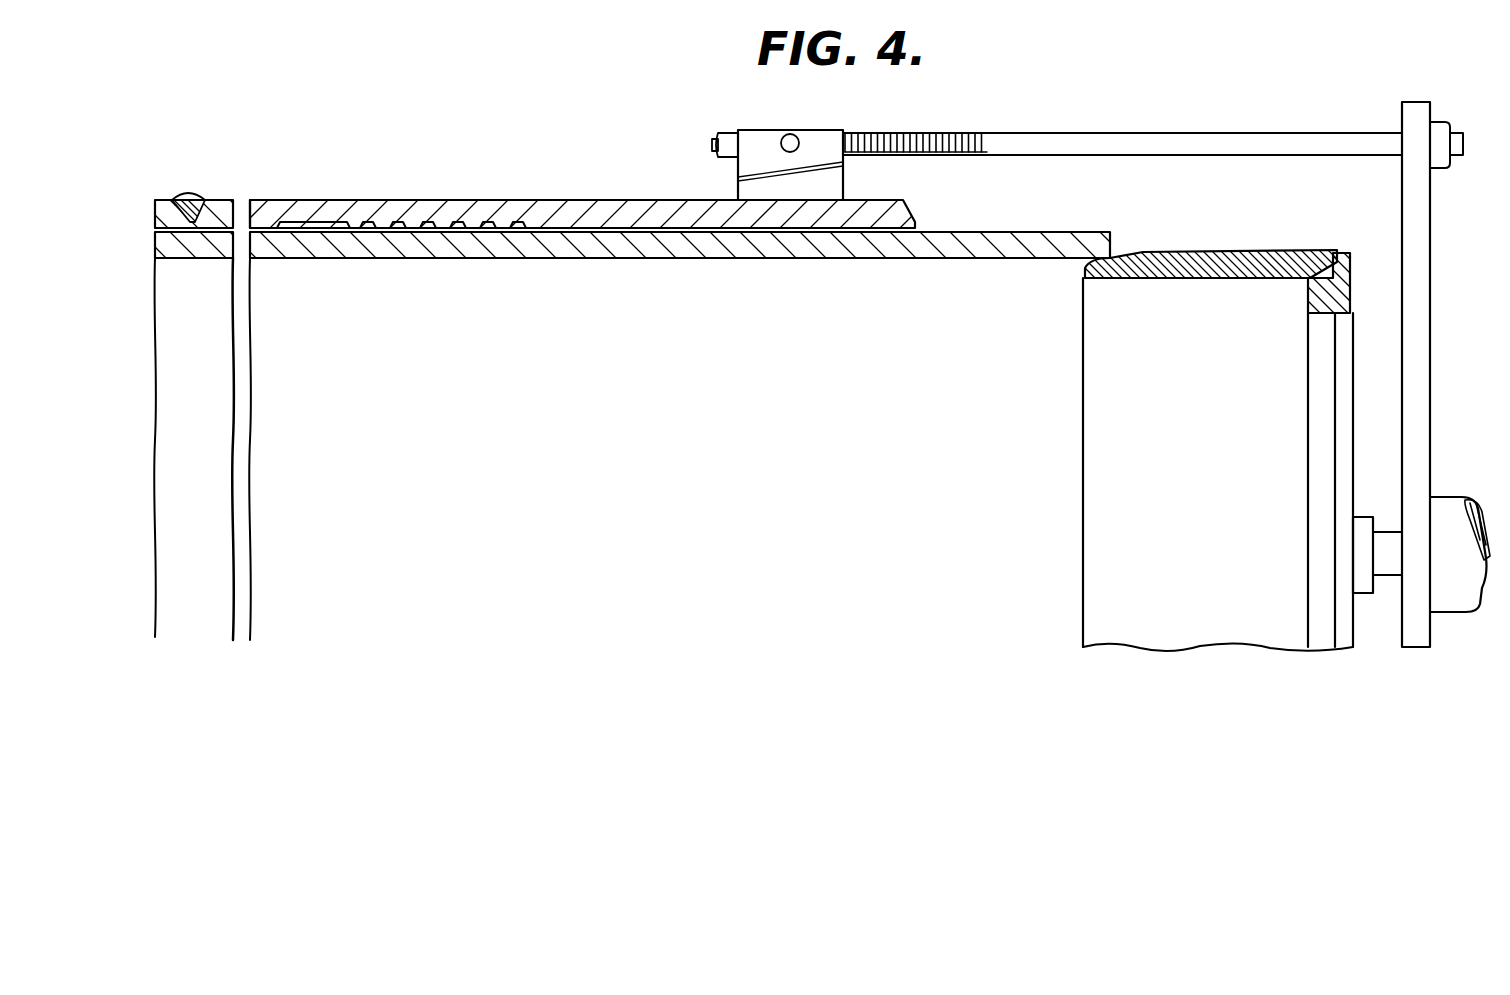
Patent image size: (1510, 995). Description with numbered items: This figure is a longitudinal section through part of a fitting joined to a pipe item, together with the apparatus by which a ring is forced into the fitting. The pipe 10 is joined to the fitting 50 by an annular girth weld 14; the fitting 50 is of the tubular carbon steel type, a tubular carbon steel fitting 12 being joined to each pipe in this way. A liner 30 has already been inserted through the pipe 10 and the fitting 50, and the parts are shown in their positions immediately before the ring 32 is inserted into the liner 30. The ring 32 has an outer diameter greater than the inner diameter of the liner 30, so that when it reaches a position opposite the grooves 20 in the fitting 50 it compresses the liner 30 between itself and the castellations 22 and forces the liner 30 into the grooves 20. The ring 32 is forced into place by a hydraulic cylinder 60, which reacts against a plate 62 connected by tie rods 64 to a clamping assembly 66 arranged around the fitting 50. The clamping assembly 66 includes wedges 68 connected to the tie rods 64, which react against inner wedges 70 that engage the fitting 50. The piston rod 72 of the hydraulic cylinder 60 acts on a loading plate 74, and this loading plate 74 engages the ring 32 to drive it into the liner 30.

The pipe 10 is at (160, 212).
The tubular carbon steel fitting 12 is at (515, 212).
The annular girth weld 14 is at (195, 195).
The grooves 20 is at (412, 224).
The castellations 22 is at (355, 228).
The liner 30 is at (360, 245).
The ring 32 is at (1213, 262).
The fitting 50 is at (265, 215).
The hydraulic cylinder 60 is at (1450, 508).
The plate 62 is at (1410, 193).
The tie rods 64 is at (1253, 142).
The clamping assembly 66 is at (814, 122).
The wedges 68 is at (762, 102).
The inner wedges 70 is at (745, 178).
The piston rod 72 is at (1383, 548).
The loading plate 74 is at (1320, 450).